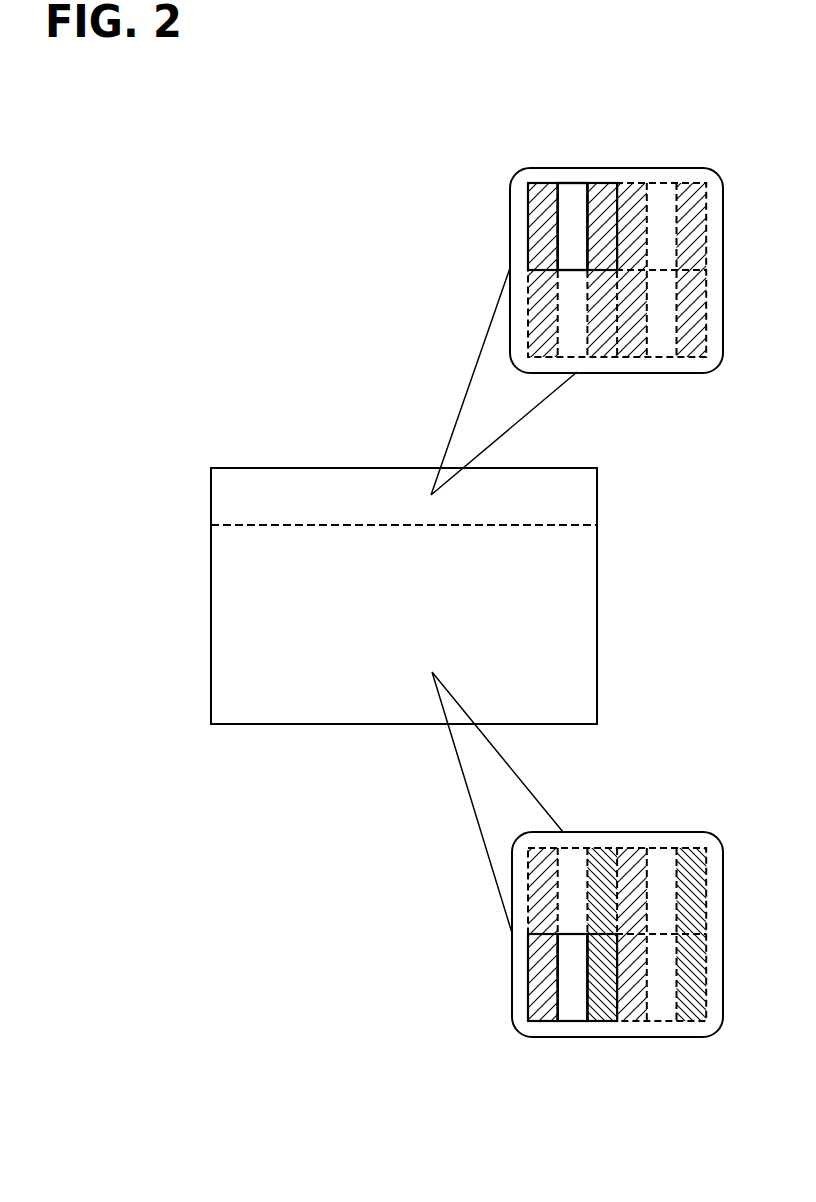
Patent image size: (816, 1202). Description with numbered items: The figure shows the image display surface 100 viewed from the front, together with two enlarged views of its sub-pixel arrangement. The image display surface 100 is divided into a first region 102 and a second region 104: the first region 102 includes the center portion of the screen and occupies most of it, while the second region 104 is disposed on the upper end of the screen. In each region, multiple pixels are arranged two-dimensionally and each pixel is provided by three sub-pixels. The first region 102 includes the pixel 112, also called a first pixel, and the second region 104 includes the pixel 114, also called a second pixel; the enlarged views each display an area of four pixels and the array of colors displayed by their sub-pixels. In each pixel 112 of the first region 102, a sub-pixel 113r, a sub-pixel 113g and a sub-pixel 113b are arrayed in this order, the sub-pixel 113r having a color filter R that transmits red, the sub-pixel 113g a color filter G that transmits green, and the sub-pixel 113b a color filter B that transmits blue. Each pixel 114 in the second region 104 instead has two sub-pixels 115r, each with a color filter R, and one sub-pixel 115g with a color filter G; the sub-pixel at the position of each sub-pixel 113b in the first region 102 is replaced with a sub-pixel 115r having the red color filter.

The image display surface 100 is at (290, 467).
The first region 102 is at (170, 626).
The second region 104 is at (362, 496).
The pixel 112 is at (578, 973).
The sub-pixel 113r is at (546, 1015).
The sub-pixel 113g is at (572, 1015).
The sub-pixel 113b is at (602, 1013).
The pixel 114 is at (578, 233).
The sub-pixel 115r is at (545, 190).
The sub-pixel 115g is at (572, 190).